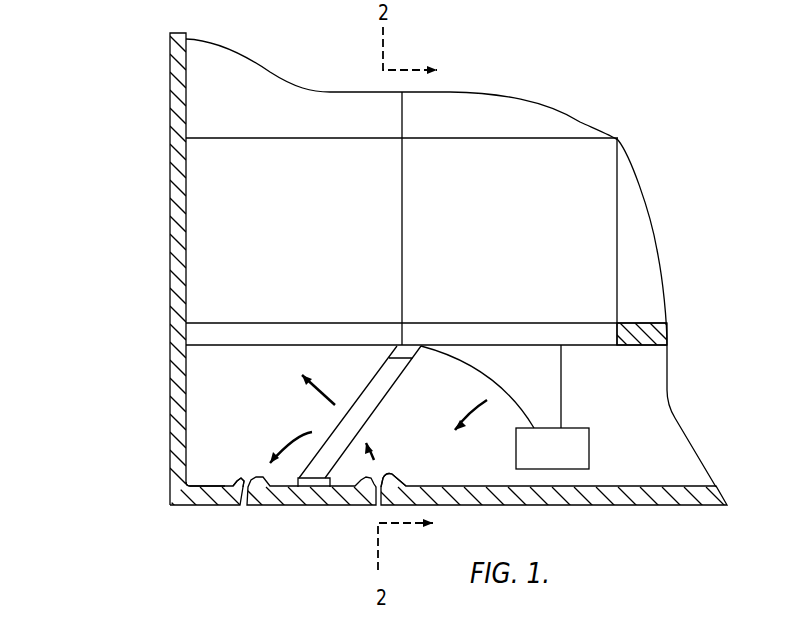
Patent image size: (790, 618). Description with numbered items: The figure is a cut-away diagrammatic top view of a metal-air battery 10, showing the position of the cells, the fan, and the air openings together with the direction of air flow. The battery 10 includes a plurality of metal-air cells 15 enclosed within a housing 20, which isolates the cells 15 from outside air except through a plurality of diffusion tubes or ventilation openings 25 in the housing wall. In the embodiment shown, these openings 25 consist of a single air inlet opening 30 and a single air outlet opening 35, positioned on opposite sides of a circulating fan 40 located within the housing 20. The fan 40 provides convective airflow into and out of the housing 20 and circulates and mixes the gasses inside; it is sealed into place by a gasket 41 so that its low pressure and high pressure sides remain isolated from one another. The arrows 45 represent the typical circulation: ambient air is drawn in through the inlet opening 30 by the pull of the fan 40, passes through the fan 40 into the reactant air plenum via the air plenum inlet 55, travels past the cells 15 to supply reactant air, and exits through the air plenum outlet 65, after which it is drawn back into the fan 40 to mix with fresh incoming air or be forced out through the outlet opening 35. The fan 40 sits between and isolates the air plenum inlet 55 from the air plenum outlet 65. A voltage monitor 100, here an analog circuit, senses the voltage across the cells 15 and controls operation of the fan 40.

The metal-air battery 10 is at (97, 130).
The housing 20 is at (163, 193).
The metal-air cells 15 is at (279, 243).
The ventilation openings 25 is at (244, 525).
The air inlet opening 30 is at (391, 477).
The air outlet opening 35 is at (242, 473).
The circulating fan 40 is at (385, 396).
The gasket 41 is at (315, 488).
The arrows 45 is at (326, 396).
The air plenum inlet 55 is at (238, 340).
The air plenum outlet 65 is at (593, 343).
The voltage monitor 100 is at (557, 463).